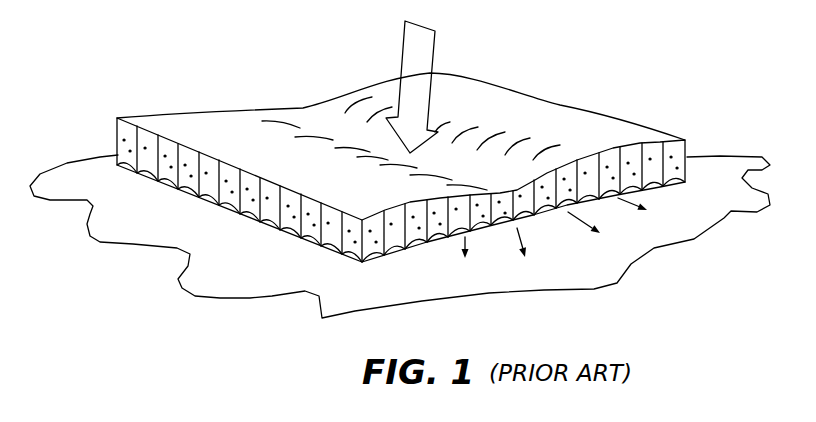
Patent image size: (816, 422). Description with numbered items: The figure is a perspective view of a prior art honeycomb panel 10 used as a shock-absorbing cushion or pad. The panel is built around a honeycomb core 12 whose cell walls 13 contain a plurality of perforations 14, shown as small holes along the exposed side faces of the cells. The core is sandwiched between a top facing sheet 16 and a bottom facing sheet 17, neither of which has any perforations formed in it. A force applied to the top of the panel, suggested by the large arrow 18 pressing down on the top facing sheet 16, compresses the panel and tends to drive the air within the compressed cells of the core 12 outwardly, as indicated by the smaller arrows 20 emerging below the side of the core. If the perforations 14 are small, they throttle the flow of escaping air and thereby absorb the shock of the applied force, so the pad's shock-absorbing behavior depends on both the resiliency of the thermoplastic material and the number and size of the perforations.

The honeycomb panel 10 is at (286, 370).
The honeycomb core 12 is at (92, 132).
The cell walls 13 is at (255, 205).
The perforations 14 is at (193, 181).
The top facing sheet 16 is at (185, 113).
The bottom facing sheet 17 is at (293, 228).
The arrow 18 is at (422, 49).
The arrows 20 is at (570, 214).